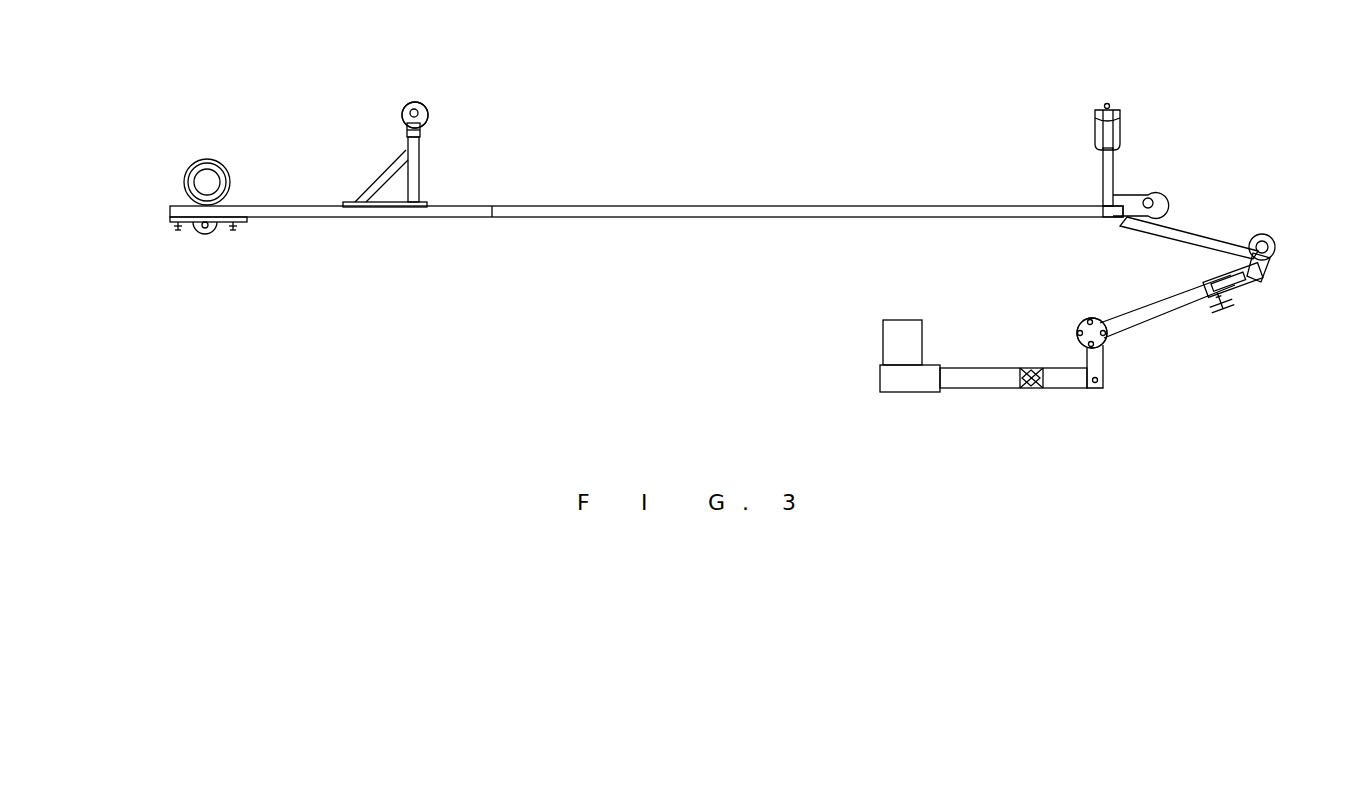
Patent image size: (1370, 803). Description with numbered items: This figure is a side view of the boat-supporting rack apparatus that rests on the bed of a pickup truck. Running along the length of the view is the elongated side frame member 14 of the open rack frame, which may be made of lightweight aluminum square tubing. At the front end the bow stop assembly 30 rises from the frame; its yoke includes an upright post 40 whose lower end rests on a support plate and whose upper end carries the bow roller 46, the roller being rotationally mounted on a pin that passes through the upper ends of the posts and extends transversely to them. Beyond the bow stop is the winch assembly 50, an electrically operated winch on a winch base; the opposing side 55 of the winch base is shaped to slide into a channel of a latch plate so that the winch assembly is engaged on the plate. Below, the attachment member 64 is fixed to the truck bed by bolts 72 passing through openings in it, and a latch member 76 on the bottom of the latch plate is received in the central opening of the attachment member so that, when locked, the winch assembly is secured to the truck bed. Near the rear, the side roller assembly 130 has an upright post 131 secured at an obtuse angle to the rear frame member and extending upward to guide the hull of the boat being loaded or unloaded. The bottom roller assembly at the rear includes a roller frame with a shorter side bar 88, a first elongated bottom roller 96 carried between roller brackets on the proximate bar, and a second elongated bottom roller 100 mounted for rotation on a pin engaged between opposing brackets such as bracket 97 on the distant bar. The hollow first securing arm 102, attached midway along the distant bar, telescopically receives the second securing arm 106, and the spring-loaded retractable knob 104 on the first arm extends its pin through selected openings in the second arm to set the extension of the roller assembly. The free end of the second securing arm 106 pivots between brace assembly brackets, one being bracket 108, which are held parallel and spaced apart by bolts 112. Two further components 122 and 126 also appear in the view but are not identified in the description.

The first side frame member 14 is at (667, 206).
The bow stop assembly 30 is at (416, 102).
The upright post 40 is at (421, 165).
The bow roller 46 is at (429, 113).
The winch assembly 50 is at (213, 158).
The opposing side of winch base 55 is at (172, 213).
The attachment member 64 is at (237, 231).
The bolts 72 is at (178, 231).
The latch member 76 is at (205, 234).
The side bar 88 is at (1160, 233).
The first elongated bottom roller 96 is at (1150, 191).
The roller bracket 97 is at (1272, 266).
The second elongated bottom roller 100 is at (1266, 234).
The first securing arm 102 is at (1262, 284).
The first retractable spring-loaded knob 104 is at (1222, 312).
The second securing arm 106 is at (1170, 330).
The brace assembly bracket 108 is at (1077, 332).
The bolts 112 is at (1092, 318).
The coupling 122 is at (1032, 390).
The motor 126 is at (880, 382).
The side roller assembly 130 is at (1108, 103).
The upright post 131 is at (1102, 165).